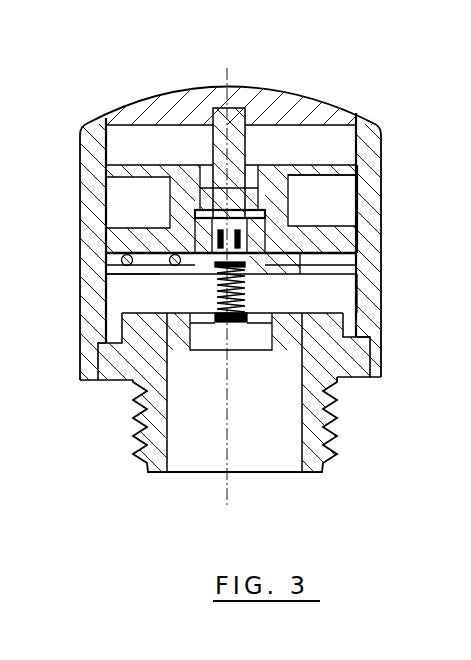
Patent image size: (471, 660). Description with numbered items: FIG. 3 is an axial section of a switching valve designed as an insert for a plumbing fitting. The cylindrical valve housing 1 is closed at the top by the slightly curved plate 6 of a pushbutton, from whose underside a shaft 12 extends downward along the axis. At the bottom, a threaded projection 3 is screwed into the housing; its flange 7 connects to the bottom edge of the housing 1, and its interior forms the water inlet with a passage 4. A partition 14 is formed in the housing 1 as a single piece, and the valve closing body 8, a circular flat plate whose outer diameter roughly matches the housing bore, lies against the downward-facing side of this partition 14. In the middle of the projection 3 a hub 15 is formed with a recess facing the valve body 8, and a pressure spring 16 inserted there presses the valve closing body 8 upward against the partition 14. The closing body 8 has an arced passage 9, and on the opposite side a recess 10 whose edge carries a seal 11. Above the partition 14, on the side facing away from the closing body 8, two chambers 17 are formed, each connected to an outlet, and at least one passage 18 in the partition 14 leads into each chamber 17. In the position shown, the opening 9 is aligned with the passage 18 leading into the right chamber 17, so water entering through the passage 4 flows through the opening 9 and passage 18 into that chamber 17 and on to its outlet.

The valve housing 1 is at (373, 209).
The projection 3 is at (150, 428).
The passage 4 is at (277, 443).
The plate 6 is at (297, 66).
The flange 7 is at (350, 362).
The valve closing body 8 is at (345, 263).
The arced passage 9 is at (340, 290).
The recess 10 is at (160, 266).
The seal 11 is at (125, 265).
The shaft 12 is at (235, 146).
The partition 14 is at (122, 244).
The hub 15 is at (256, 330).
The pressure spring 16 is at (215, 297).
The chamber 17 is at (343, 188).
The passage 18 is at (340, 205).